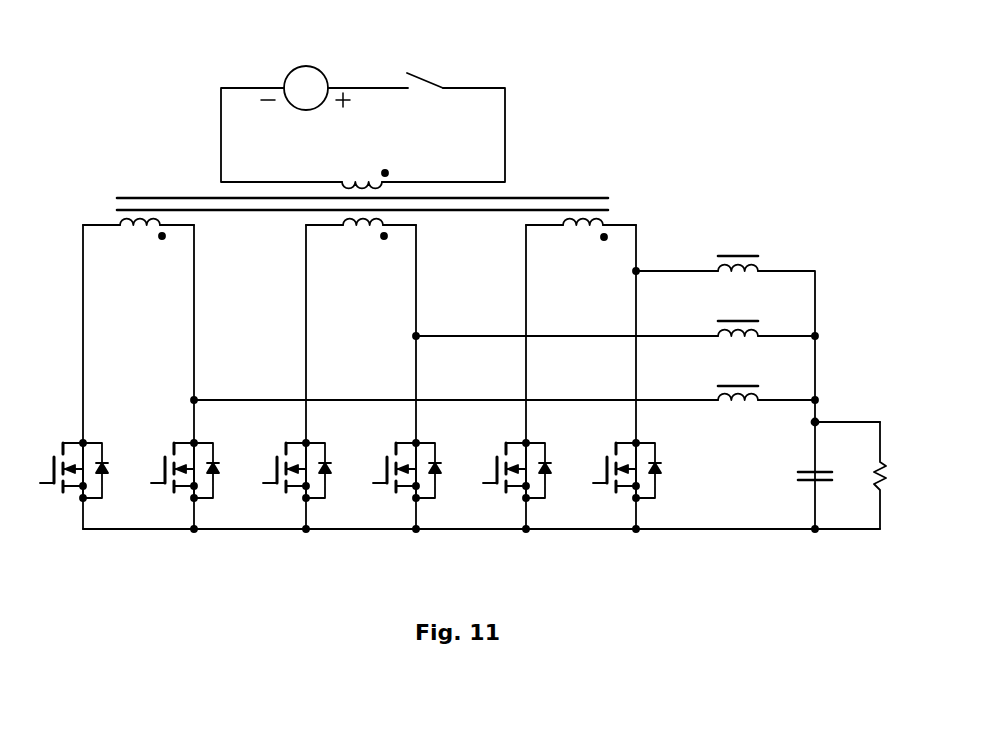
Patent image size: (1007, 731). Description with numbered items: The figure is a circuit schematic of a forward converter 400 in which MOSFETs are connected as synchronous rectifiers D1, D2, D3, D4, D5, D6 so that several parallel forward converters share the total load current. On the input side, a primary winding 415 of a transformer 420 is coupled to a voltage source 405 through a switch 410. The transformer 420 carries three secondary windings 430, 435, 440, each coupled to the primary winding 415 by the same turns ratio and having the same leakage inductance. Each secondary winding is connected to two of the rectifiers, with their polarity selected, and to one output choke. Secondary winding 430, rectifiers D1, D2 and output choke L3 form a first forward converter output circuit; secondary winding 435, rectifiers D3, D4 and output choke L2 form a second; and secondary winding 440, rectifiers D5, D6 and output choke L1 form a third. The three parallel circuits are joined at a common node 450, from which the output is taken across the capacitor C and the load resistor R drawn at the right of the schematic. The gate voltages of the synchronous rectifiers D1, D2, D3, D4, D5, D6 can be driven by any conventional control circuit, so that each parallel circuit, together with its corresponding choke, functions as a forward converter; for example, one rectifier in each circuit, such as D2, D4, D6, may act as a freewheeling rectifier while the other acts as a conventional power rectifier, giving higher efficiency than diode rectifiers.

The forward converter 400 is at (521, 55).
The voltage source 405 is at (308, 65).
The switch 410 is at (430, 78).
The primary winding 415 is at (357, 175).
The transformer 420 is at (606, 197).
The secondary winding 430 is at (135, 230).
The secondary winding 435 is at (357, 228).
The secondary winding 440 is at (576, 232).
The node 450 is at (817, 419).
The synchronous rectifier D1 is at (91, 477).
The synchronous rectifier D2 is at (202, 477).
The synchronous rectifier D3 is at (314, 477).
The synchronous rectifier D4 is at (424, 477).
The synchronous rectifier D5 is at (534, 477).
The synchronous rectifier D6 is at (644, 477).
The output choke L1 is at (758, 254).
The output choke L2 is at (758, 320).
The output choke L3 is at (758, 385).
The capacitor C is at (828, 470).
The resistor R is at (885, 468).